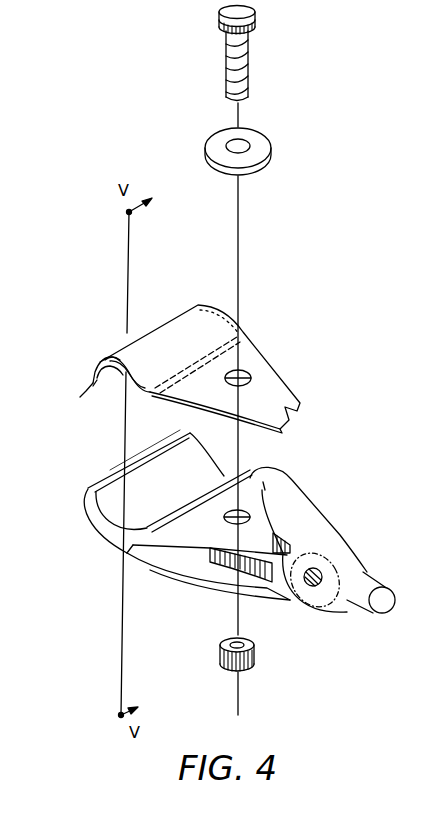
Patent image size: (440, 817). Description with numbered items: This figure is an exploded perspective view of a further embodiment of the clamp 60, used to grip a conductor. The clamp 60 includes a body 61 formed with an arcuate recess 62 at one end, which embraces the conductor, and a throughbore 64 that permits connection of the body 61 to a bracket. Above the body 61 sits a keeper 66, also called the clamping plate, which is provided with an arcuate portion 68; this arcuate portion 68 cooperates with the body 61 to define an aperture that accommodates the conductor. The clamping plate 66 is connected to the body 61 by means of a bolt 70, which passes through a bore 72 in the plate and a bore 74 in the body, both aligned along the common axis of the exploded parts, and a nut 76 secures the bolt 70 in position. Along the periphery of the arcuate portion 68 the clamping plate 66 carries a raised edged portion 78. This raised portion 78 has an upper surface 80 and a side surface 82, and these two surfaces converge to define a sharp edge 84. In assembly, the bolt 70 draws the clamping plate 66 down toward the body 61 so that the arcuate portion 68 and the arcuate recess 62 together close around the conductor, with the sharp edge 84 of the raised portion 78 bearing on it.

The clamp 60 is at (239, 544).
The body 61 is at (118, 572).
The arcuate recess 62 is at (145, 483).
The throughbore 64 is at (312, 590).
The keeper 66 is at (194, 336).
The arcuate portion 68 is at (165, 334).
The bolt 70 is at (248, 52).
The bore 72 is at (243, 370).
The bore 74 is at (242, 523).
The nut 76 is at (253, 665).
The raised edged portion 78 is at (208, 303).
The upper surface 80 is at (212, 302).
The side surface 82 is at (80, 397).
The sharp edge 84 is at (117, 368).